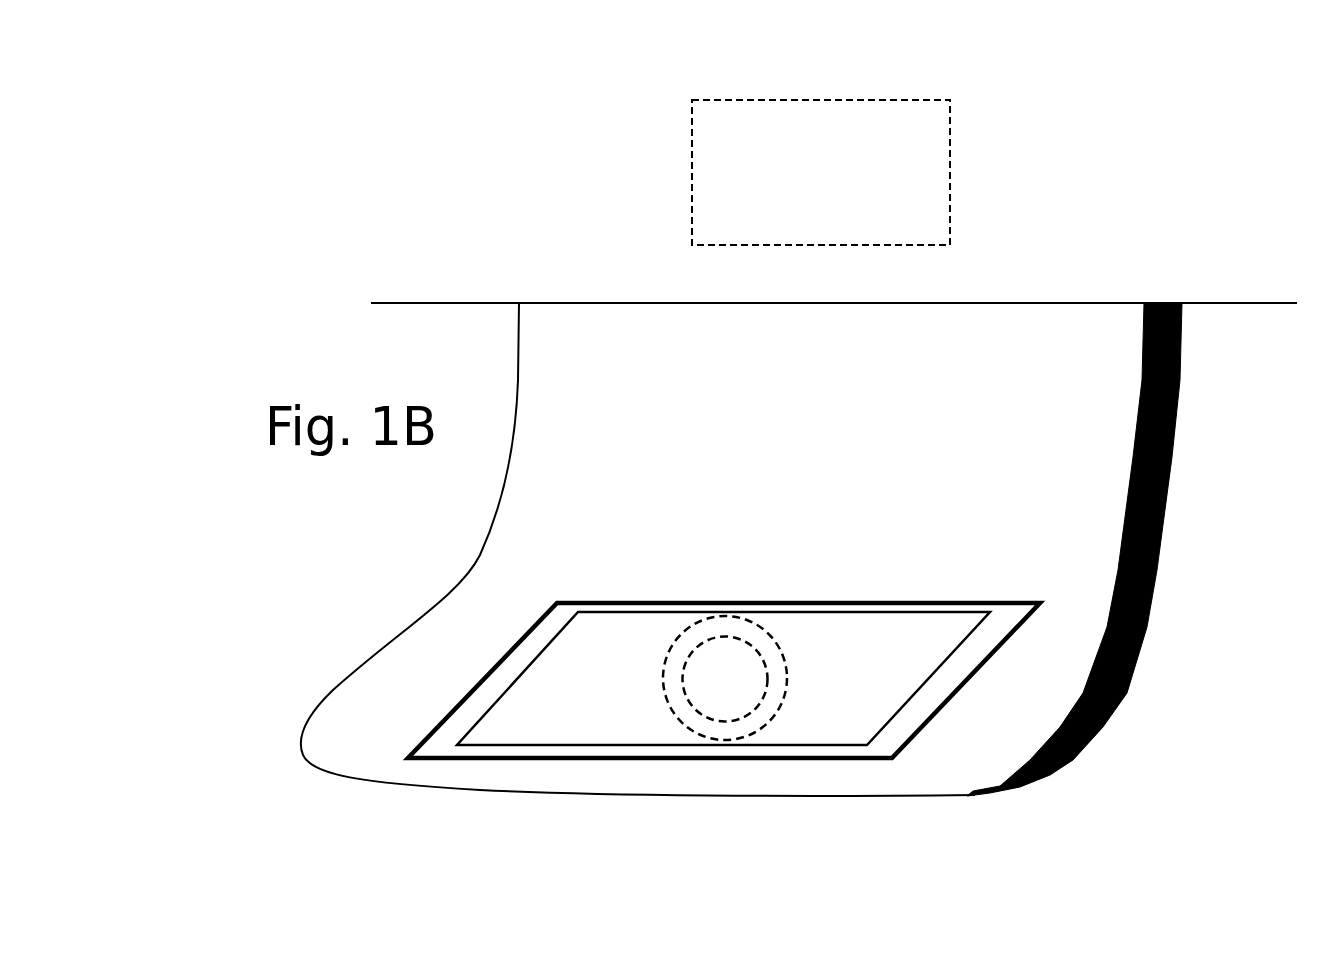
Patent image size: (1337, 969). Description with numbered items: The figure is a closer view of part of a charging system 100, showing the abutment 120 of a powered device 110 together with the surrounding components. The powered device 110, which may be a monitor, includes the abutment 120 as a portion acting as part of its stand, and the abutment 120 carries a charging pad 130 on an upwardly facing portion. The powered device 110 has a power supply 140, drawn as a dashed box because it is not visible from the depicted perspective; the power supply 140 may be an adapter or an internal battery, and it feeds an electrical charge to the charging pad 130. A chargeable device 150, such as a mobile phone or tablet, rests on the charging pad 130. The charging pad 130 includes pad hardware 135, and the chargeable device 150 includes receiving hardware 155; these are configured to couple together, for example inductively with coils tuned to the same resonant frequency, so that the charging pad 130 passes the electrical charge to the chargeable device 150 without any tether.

The charging system 100 is at (303, 103).
The powered device 110 is at (467, 236).
The abutment 120 is at (372, 695).
The charging pad 130 is at (525, 628).
The pad hardware 135 is at (665, 692).
The power supply 140 is at (843, 189).
The chargeable device 150 is at (827, 747).
The receiving hardware 155 is at (708, 713).